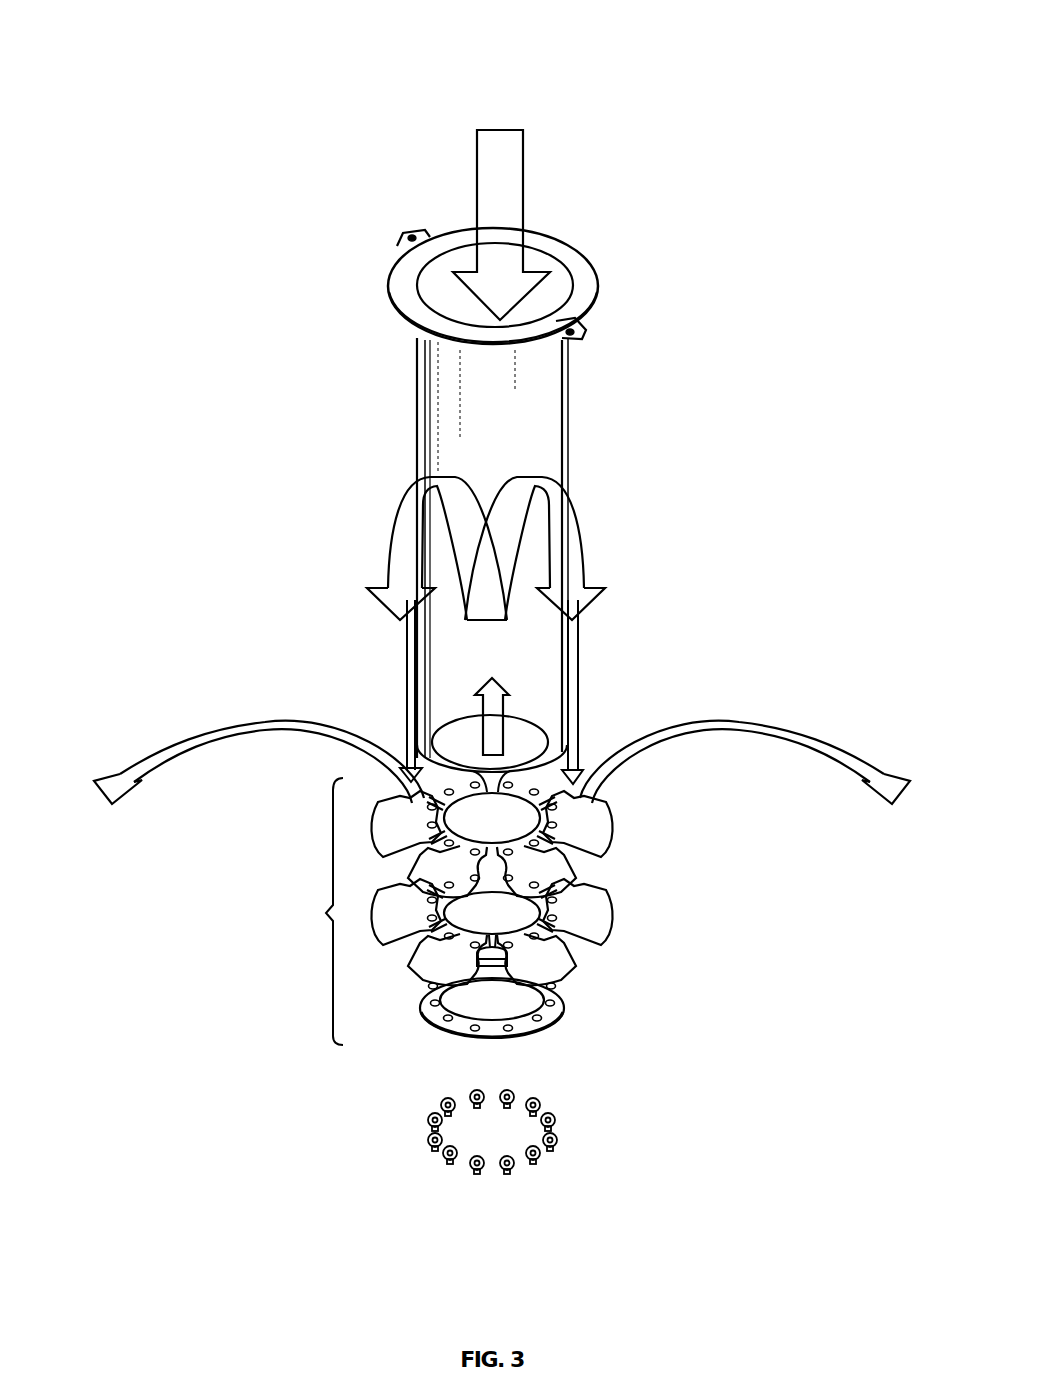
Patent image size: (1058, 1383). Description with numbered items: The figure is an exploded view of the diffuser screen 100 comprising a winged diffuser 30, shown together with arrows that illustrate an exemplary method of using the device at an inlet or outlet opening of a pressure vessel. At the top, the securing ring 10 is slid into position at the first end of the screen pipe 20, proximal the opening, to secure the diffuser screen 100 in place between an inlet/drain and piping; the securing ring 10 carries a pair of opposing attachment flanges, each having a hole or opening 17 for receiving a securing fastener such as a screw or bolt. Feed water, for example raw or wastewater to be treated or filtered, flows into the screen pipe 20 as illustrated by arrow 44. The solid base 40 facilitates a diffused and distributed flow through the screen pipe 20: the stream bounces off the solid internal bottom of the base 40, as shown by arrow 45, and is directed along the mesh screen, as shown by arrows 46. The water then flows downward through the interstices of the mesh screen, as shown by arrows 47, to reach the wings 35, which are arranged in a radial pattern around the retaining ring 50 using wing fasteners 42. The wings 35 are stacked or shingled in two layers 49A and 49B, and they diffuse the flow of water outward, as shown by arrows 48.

The diffuser screen 100 is at (663, 36).
The arrow 44 is at (527, 165).
The hole or opening 17 is at (412, 235).
The securing ring 10 is at (590, 262).
The screen pipe 20 is at (568, 433).
The arrows 46 is at (583, 540).
The arrows 47 is at (405, 685).
The arrow 45 is at (507, 703).
The solid base 40 is at (537, 737).
The arrows 48 is at (197, 725).
The winged diffuser 30 is at (490, 910).
The first layer 49A is at (607, 807).
The second layer 49B is at (605, 912).
The wings 35 is at (615, 837).
The retaining ring 50 is at (563, 1010).
The wing fasteners 42 is at (556, 1126).